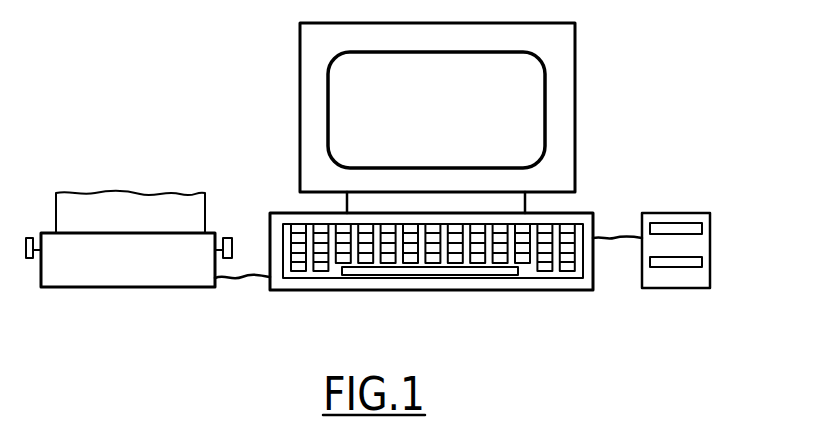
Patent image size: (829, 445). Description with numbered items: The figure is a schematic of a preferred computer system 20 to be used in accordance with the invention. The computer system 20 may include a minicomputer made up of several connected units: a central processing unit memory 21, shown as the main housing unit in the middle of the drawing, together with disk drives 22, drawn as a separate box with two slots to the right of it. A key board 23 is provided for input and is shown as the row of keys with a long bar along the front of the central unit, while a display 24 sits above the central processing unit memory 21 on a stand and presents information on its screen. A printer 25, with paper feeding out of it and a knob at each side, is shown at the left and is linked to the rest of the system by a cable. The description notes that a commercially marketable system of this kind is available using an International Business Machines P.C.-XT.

The computer system 20 is at (243, 84).
The central processing unit memory 21 is at (420, 253).
The disk drives 22 is at (712, 240).
The key board 23 is at (398, 290).
The display 24 is at (575, 102).
The printer 25 is at (173, 277).